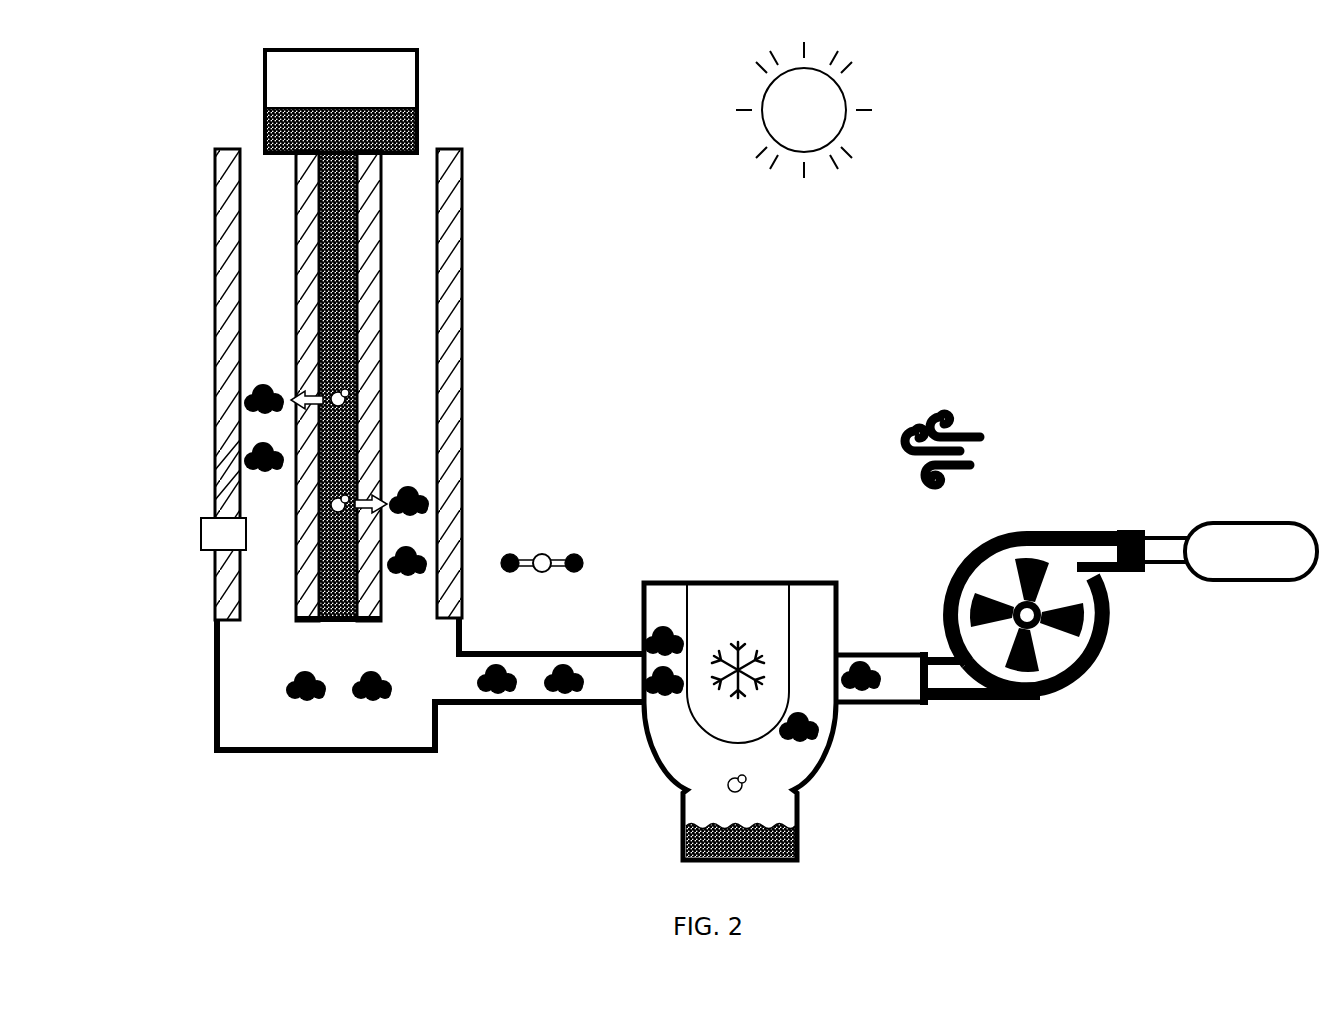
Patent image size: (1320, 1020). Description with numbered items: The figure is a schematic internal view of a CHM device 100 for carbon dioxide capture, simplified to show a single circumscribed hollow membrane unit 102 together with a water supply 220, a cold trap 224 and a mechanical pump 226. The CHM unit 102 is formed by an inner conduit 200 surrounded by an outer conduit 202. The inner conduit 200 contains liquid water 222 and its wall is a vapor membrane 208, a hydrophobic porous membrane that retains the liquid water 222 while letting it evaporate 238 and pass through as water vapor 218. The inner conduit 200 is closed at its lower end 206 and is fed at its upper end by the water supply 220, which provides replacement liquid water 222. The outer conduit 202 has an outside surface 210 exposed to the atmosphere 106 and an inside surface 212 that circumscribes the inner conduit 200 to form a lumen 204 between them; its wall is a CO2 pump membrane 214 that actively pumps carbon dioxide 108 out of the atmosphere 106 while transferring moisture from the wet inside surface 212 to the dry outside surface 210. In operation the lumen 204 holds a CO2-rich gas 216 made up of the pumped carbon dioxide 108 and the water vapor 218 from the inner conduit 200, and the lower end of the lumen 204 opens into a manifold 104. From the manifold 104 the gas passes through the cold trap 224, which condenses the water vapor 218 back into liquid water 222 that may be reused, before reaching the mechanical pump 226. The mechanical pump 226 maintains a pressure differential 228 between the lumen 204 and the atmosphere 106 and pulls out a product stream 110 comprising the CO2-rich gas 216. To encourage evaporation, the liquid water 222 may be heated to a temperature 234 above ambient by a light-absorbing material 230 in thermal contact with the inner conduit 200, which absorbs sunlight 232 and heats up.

The CHM device 100 is at (1075, 178).
The circumscribed hollow membrane unit 102 is at (374, 438).
The manifold 104 is at (253, 675).
The atmosphere 106 is at (958, 407).
The carbon dioxide 108 is at (583, 557).
The product stream 110 is at (1158, 562).
The inner conduit 200 is at (395, 305).
The outer conduit 202 is at (477, 410).
The lumen 204 is at (337, 341).
The lower end of the inner conduit 206 is at (337, 623).
The vapor membrane 208 is at (355, 478).
The outside surface 210 is at (214, 418).
The inside surface 212 is at (236, 482).
The CO2 pump membrane 214 is at (224, 594).
The CO2-rich gas 216 is at (423, 573).
The water vapor 218 is at (428, 503).
The water supply 220 is at (265, 62).
The liquid water 222 is at (405, 128).
The cold trap 224 is at (720, 555).
The mechanical pump 226 is at (1068, 697).
The pressure differential 228 is at (201, 535).
The light-absorbing material 230 is at (382, 227).
The sunlight 232 is at (790, 182).
The temperature 234 is at (318, 267).
The evaporation 238 is at (380, 497).